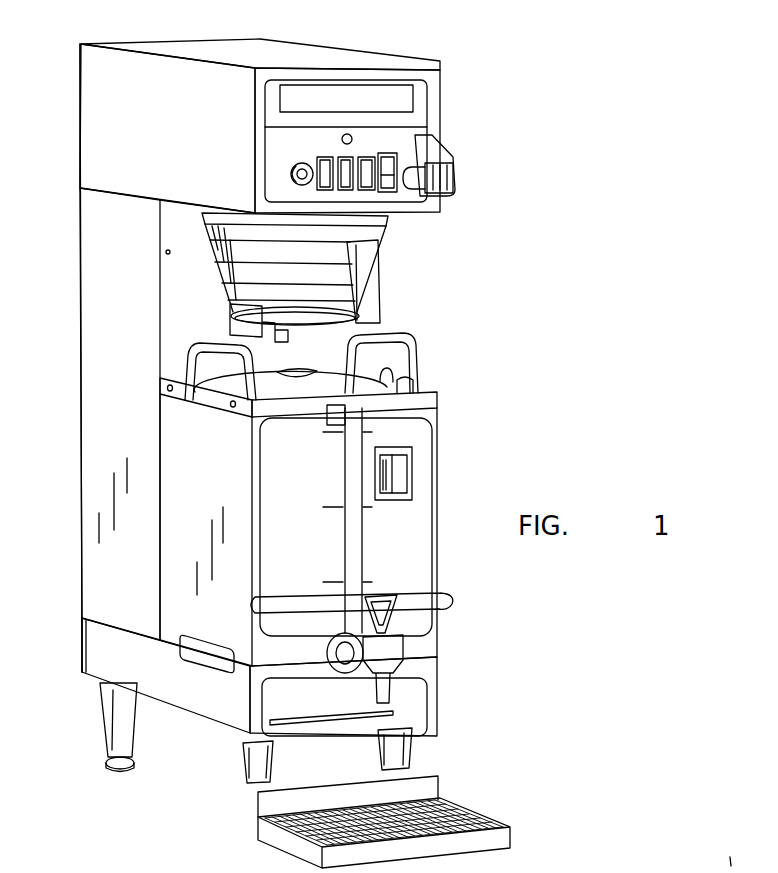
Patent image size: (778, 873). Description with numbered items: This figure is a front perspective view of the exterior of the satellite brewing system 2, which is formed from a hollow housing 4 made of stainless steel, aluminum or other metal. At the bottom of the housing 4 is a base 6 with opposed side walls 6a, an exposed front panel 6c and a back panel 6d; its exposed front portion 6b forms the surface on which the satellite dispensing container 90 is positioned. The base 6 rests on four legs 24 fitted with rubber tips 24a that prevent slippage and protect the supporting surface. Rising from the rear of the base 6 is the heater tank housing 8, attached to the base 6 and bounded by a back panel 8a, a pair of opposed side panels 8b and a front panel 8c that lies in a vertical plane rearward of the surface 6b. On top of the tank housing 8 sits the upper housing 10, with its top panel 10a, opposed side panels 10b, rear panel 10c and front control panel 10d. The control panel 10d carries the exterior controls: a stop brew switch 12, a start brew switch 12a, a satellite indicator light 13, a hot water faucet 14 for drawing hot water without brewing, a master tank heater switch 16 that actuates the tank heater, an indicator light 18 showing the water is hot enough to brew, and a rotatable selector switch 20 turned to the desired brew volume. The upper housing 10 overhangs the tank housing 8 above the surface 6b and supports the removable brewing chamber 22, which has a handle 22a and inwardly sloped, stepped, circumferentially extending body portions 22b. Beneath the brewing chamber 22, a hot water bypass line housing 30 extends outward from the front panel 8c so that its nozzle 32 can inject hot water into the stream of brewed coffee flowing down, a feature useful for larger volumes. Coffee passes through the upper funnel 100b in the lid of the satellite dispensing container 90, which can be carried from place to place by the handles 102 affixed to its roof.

The satellite brewing system 2 is at (466, 337).
The hollow housing 4 is at (110, 416).
The base 6 is at (197, 703).
The side walls 6a is at (97, 708).
The exposed front portion 6b is at (248, 683).
The front panel 6c is at (420, 700).
The back panel 6d is at (82, 642).
The heater tank housing 8 is at (93, 263).
The back panel 8a is at (80, 303).
The side panels 8b is at (129, 351).
The front panel 8c is at (180, 242).
The upper housing 10 is at (126, 72).
The top panel 10a is at (268, 50).
The side panels 10b is at (148, 130).
The rear panel 10c is at (80, 118).
The front control panel 10d is at (420, 107).
The stop brew switch 12 is at (384, 192).
The start brew switch 12a is at (427, 143).
The satellite indicator light 13 is at (262, 157).
The hot water faucet 14 is at (452, 174).
The master tank heater switch 16 is at (398, 192).
The indicator light 18 is at (340, 139).
The selector switch 20 is at (290, 174).
The brewing chamber 22 is at (220, 243).
The handle 22a is at (380, 313).
The stepped body portions 22b is at (235, 298).
The legs 24 is at (107, 728).
The rubber tips 24a is at (120, 775).
The hot water bypass line housing 30 is at (233, 382).
The nozzle 32 is at (387, 338).
The satellite dispensing container 90 is at (422, 517).
The upper funnel 100b is at (474, 835).
The handles 102 is at (646, 845).